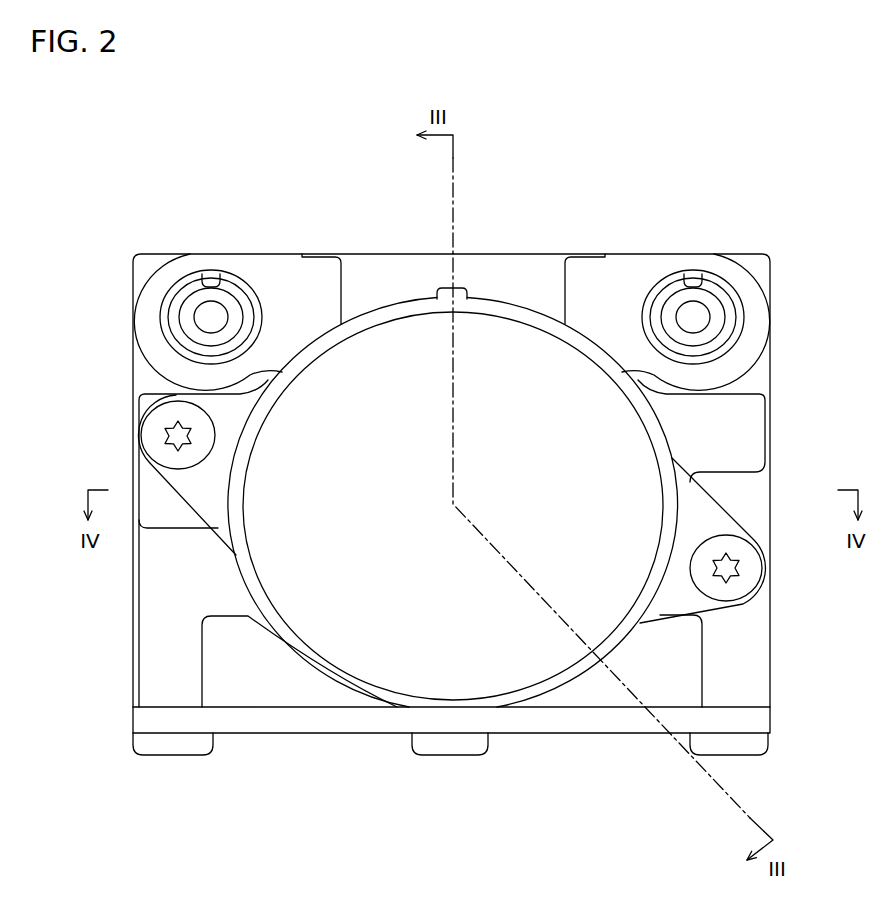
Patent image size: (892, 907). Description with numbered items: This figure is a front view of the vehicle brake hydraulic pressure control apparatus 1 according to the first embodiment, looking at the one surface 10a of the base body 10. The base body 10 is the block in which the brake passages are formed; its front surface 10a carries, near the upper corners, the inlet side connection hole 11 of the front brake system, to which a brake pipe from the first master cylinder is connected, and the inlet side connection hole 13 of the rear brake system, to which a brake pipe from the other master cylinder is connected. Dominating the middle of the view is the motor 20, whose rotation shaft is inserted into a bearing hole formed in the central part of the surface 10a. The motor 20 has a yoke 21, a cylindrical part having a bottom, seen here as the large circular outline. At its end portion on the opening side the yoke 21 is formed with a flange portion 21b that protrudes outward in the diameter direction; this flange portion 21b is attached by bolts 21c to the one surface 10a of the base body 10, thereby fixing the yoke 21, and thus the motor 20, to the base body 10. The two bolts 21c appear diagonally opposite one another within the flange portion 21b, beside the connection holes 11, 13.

The lens unit 1 is at (505, 222).
The base body 10 is at (361, 247).
The one surface of the base body 10a is at (420, 252).
The inlet side connection hole 11 is at (688, 276).
The inlet side connection hole 13 is at (219, 274).
The motor 20 is at (531, 306).
The yoke 21 is at (565, 365).
The flange portion 21b is at (712, 522).
The bolts 21c is at (152, 440).